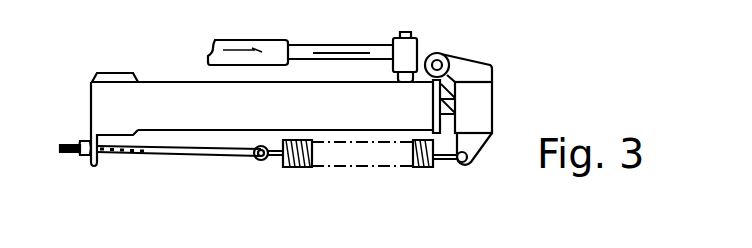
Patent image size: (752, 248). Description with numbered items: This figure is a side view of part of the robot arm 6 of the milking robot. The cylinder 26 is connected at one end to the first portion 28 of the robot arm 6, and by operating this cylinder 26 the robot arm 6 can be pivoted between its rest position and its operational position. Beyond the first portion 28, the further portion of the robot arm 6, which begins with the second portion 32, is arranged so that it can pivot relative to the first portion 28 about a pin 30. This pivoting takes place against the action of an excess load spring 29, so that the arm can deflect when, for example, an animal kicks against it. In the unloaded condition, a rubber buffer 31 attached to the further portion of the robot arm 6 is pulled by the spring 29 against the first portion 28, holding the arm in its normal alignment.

The robot arm 6 is at (367, 38).
The cylinder 26 is at (267, 42).
The first portion 28 is at (158, 82).
The excess load spring 29 is at (325, 168).
The pin 30 is at (444, 58).
The rubber buffer 31 is at (453, 104).
The second portion 32 is at (486, 124).